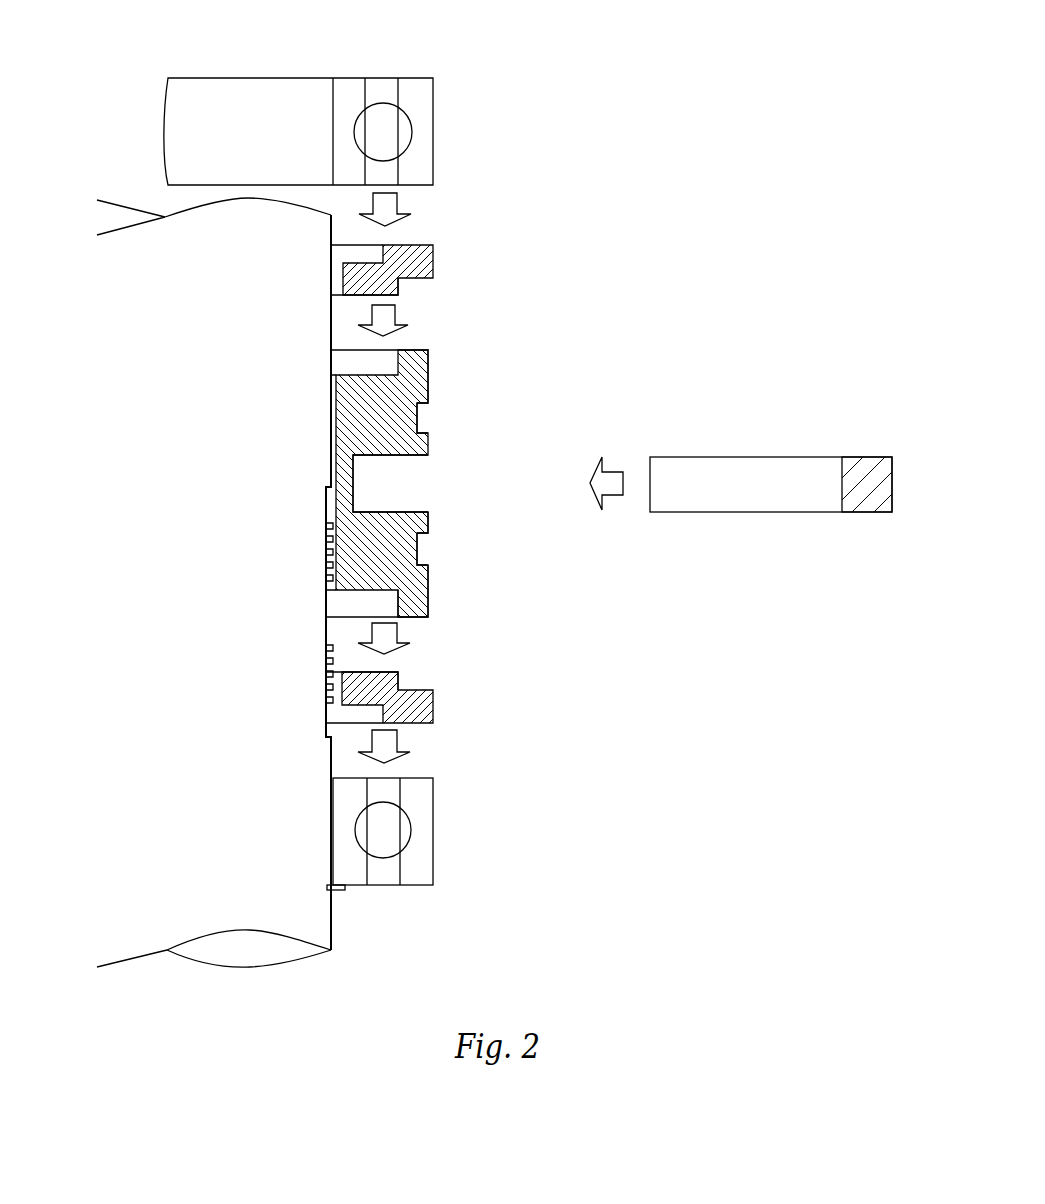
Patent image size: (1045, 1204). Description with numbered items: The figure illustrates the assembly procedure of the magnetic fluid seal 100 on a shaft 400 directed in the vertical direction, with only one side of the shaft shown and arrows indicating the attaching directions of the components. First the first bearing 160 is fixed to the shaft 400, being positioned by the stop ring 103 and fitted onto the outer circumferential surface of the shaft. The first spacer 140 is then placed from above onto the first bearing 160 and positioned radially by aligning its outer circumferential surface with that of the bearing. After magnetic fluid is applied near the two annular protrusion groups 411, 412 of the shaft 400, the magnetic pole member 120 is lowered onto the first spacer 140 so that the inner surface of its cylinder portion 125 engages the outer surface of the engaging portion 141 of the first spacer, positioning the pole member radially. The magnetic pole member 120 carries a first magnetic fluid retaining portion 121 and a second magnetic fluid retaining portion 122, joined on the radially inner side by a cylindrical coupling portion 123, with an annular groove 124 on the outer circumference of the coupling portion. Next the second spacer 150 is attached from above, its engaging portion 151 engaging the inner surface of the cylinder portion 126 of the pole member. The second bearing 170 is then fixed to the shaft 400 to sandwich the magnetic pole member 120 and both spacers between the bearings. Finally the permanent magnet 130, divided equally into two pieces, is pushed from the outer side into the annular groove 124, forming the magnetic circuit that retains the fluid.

The magnetic fluid seal 100 is at (504, 79).
The second bearing 170 is at (427, 153).
The second spacer 150 is at (440, 278).
The engaging portion 151 is at (393, 297).
The magnetic pole member 120 is at (433, 443).
The cylinder portion 126 is at (428, 372).
The second magnetic fluid retaining portion 122 is at (372, 403).
The coupling portion 123 is at (353, 477).
The annular groove 124 is at (415, 507).
The first magnetic fluid retaining portion 121 is at (372, 547).
The cylinder portion 125 is at (417, 607).
The permanent magnet 130 is at (797, 512).
The first spacer 140 is at (436, 695).
The engaging portion 141 is at (400, 672).
The first bearing 160 is at (427, 850).
The stop ring 103 is at (347, 888).
The shaft 400 is at (135, 928).
The annular protrusion group 411 is at (313, 670).
The annular protrusion group 412 is at (313, 552).